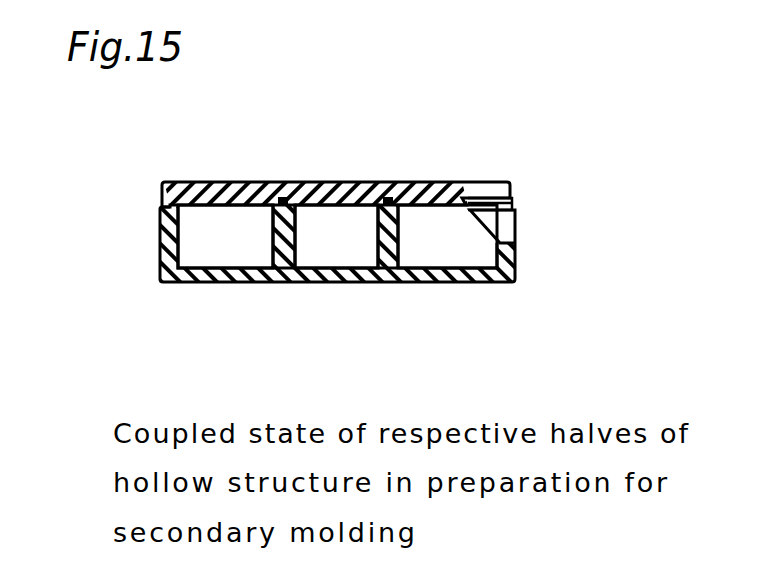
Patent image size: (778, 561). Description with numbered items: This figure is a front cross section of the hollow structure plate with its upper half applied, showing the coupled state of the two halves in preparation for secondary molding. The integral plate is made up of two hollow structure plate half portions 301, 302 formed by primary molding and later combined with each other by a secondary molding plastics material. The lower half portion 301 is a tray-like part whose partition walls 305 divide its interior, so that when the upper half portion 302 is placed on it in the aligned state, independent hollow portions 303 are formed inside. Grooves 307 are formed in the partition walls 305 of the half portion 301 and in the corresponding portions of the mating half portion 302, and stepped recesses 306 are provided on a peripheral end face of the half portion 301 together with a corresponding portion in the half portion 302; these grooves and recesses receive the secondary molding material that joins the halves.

The hollow structure plate half portion 301 is at (503, 278).
The hollow structure plate half portion 302 is at (250, 182).
The hollow portion 303 is at (343, 245).
The partition wall 305 is at (393, 240).
The stepped recess 306 is at (508, 199).
The groove 307 is at (386, 182).